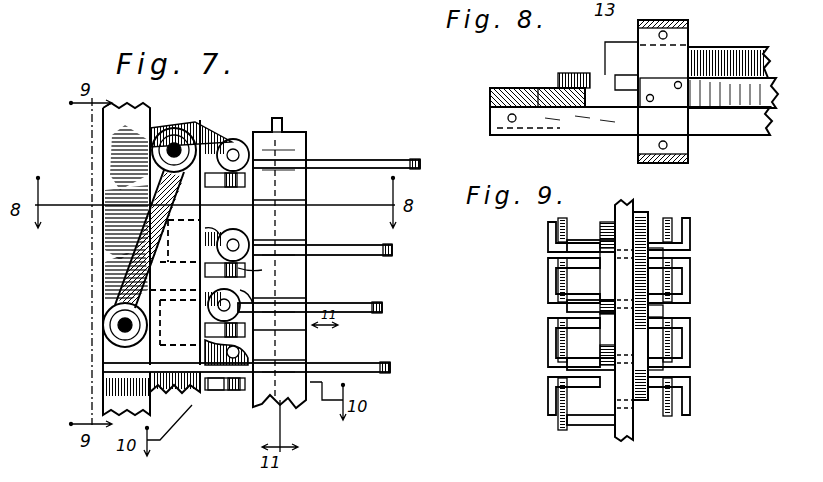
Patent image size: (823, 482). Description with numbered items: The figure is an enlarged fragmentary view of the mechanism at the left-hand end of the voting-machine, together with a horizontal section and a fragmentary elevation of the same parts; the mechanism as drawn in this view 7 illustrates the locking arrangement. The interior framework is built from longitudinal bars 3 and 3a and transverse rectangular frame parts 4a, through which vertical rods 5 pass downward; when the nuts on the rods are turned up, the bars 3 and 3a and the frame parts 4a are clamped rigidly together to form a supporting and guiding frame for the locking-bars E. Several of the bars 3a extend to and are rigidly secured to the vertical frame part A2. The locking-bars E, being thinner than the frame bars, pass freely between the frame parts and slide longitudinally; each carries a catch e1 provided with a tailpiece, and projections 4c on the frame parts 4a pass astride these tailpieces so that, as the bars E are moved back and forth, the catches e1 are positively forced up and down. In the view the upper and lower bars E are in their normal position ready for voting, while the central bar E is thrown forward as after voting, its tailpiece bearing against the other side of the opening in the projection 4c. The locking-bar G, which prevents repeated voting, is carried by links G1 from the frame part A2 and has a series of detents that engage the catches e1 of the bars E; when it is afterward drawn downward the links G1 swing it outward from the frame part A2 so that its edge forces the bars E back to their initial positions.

In FIG. 8, the longitudinal bar 3 is at (732, 50).
In FIG. 9, the longitudinal bar 3 is at (665, 312).
In FIG. 7, the longitudinal bar 3a is at (362, 160).
In FIG. 8, the longitudinal bar 3a is at (752, 135).
In FIG. 9, the longitudinal bar 3a is at (583, 250).
In FIG. 7, the transverse rectangular frame part 4a is at (290, 196).
In FIG. 8, the transverse rectangular frame part 4a is at (690, 150).
In FIG. 9, the transverse rectangular frame part 4a is at (548, 235).
In FIG. 7, the projection 4c is at (215, 392).
In FIG. 8, the projection 4c is at (616, 58).
In FIG. 7, the vertical rod 5 is at (282, 123).
In FIG. 8, the vertical rod 5 is at (665, 25).
In FIG. 9, the vertical rod 5 is at (560, 252).
In FIG. 7, the springs 7 is at (262, 270).
In FIG. 7, the vertical frame part A2 is at (110, 283).
In FIG. 9, the vertical frame part A2 is at (630, 425).
In FIG. 7, the locking-bar E is at (392, 390).
In FIG. 8, the locking-bar E is at (775, 65).
In FIG. 7, the locking-bar G is at (175, 282).
In FIG. 8, the locking-bar G is at (545, 88).
In FIG. 7, the link G1 is at (108, 243).
In FIG. 9, the link G1 is at (648, 290).
In FIG. 7, the catch e1 is at (229, 253).
In FIG. 8, the catch e1 is at (568, 73).
In FIG. 9, the catch e1 is at (604, 282).